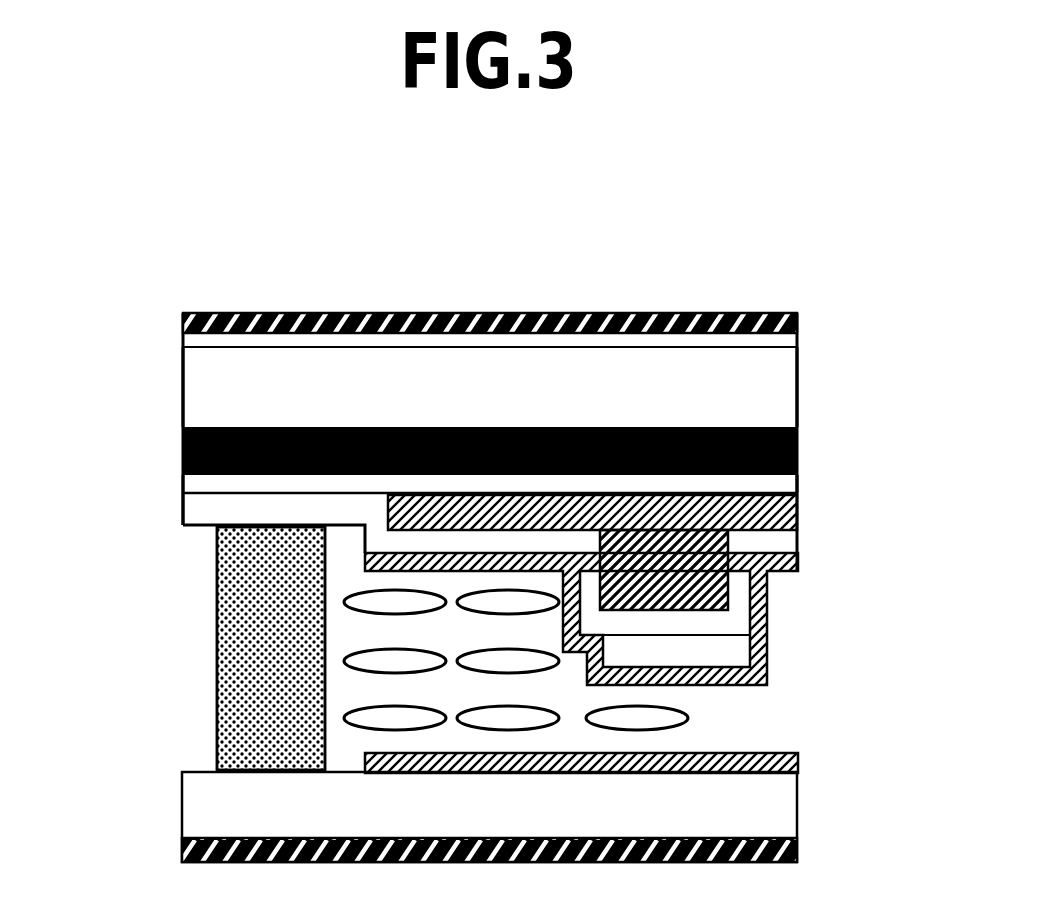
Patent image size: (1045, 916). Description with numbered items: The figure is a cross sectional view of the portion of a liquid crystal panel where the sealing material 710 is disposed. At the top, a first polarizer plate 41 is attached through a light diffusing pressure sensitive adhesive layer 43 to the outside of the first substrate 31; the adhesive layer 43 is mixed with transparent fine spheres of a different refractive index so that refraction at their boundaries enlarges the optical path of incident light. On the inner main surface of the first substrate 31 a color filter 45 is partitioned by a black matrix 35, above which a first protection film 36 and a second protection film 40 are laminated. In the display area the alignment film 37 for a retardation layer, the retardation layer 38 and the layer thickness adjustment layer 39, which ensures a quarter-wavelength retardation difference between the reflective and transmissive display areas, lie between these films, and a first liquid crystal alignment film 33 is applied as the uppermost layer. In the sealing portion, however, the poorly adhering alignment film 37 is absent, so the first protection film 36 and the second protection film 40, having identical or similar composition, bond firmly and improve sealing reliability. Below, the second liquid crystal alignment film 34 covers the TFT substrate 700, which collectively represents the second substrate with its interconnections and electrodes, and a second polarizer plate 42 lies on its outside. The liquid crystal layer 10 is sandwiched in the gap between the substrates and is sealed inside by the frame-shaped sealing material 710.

The first polarizer plate 41 is at (186, 313).
The light diffusing pressure sensitive adhesive layer 43 is at (185, 341).
The first substrate 31 is at (185, 397).
The black matrix 35 is at (185, 452).
The color filter 45 is at (658, 427).
The first protection film 36 is at (185, 483).
The second protection film 40 is at (198, 509).
The alignment film for a retardation layer 37 is at (740, 493).
The retardation layer 38 is at (707, 582).
The layer thickness adjustment layer 39 is at (726, 657).
The first liquid crystal alignment film 33 is at (767, 677).
The second liquid crystal alignment film 34 is at (800, 765).
The TFT substrate 700 is at (783, 819).
The second polarizer plate 42 is at (183, 857).
The liquid crystal layer 10 is at (357, 672).
The sealing material 710 is at (250, 600).